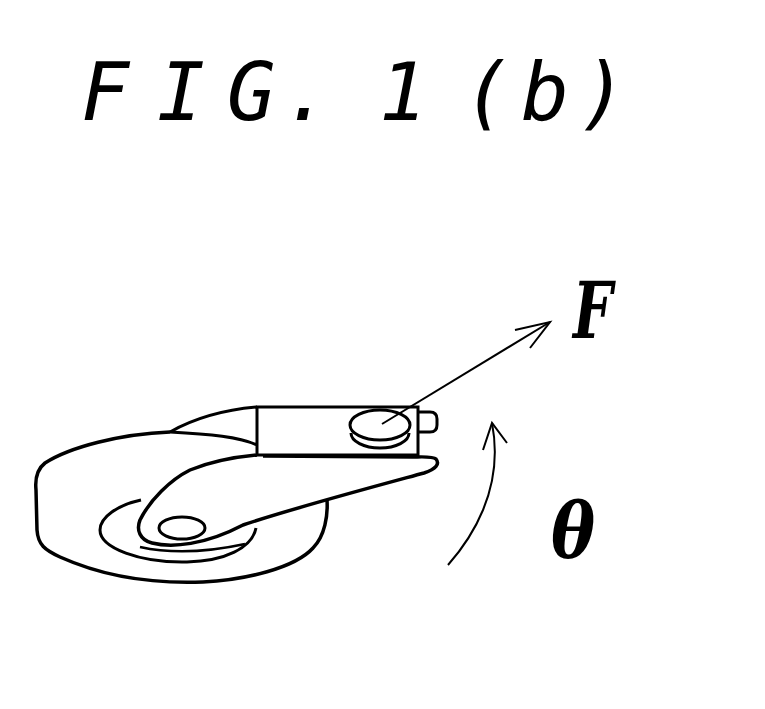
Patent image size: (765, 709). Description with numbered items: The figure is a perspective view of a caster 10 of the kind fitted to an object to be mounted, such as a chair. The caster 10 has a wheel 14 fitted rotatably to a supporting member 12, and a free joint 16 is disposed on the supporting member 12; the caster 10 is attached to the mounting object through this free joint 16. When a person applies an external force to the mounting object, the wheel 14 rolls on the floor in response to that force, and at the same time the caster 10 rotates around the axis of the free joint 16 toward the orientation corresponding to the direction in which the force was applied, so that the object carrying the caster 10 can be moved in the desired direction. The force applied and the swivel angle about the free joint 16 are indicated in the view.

The caster 10 is at (176, 362).
The supporting member 12 is at (348, 484).
The wheel 14 is at (98, 573).
The free joint 16 is at (348, 426).